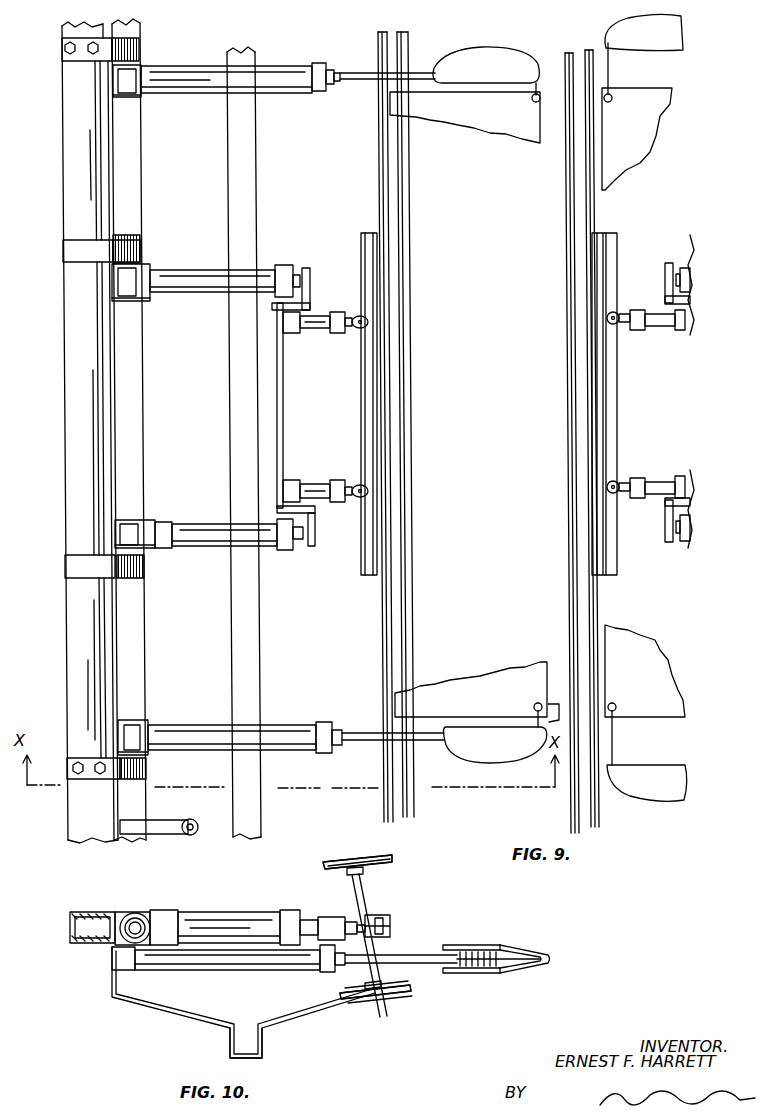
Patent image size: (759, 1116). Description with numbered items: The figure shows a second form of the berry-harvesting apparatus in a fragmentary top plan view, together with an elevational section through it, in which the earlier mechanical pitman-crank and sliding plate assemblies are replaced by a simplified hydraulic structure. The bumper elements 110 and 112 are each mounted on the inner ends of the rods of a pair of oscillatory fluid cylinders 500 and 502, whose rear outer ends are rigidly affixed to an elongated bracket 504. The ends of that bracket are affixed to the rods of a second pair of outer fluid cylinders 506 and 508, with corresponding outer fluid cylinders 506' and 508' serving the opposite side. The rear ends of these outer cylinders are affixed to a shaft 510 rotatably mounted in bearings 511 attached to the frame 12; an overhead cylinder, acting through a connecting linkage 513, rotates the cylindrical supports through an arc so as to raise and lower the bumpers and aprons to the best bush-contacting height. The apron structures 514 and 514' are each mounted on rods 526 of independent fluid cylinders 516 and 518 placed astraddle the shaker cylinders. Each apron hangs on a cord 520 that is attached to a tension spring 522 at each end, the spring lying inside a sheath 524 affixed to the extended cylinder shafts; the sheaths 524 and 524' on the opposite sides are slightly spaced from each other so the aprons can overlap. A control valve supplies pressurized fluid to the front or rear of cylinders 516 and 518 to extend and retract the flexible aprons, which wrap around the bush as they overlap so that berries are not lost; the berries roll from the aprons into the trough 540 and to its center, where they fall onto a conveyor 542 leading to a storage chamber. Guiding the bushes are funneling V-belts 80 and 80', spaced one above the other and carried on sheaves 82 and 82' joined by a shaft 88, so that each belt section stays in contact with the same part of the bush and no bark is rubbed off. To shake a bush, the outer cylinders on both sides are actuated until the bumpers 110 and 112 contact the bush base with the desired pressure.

In FIG. 9, the frame 12 is at (75, 182).
In FIG. 10, the frame 12 is at (88, 914).
In FIG. 9, the shaft 510 is at (132, 218).
In FIG. 10, the shaft 510 is at (140, 913).
In FIG. 9, the bearings 511 is at (110, 248).
In FIG. 9, the fluid cylinder 518 is at (205, 42).
In FIG. 9, the rods 526 is at (452, 34).
In FIG. 10, the rods 526 is at (388, 960).
In FIG. 9, the sheath 524 is at (482, 400).
In FIG. 10, the sheath 524 is at (502, 948).
In FIG. 9, the cord 520 is at (538, 90).
In FIG. 9, the apron structure 514 is at (468, 404).
In FIG. 9, the outer fluid cylinder 506 is at (211, 272).
In FIG. 9, the oscillatory fluid cylinder 500 is at (322, 302).
In FIG. 9, the oscillatory fluid cylinder 502 is at (312, 488).
In FIG. 10, the oscillatory fluid cylinder 502 is at (322, 920).
In FIG. 9, the elongated bracket 504 is at (280, 395).
In FIG. 9, the outer fluid cylinder 508 is at (209, 509).
In FIG. 10, the outer fluid cylinder 508 is at (234, 914).
In FIG. 9, the fluid cylinder 516 is at (160, 728).
In FIG. 10, the fluid cylinder 516 is at (170, 962).
In FIG. 9, the connecting linkage 513 is at (158, 824).
In FIG. 9, the bumper element 110 is at (368, 236).
In FIG. 10, the bumper element 110 is at (392, 925).
In FIG. 9, the bumper element 112 is at (607, 233).
In FIG. 9, the outer fluid cylinder 506' is at (650, 285).
In FIG. 9, the outer fluid cylinder 508' is at (650, 528).
In FIG. 9, the apron structure 514' is at (645, 667).
In FIG. 9, the sheath 524' is at (652, 766).
In FIG. 10, the V-belt 80 is at (386, 865).
In FIG. 10, the sheave 82 is at (357, 849).
In FIG. 10, the shaft 88 is at (372, 900).
In FIG. 10, the tension spring 522 is at (485, 976).
In FIG. 10, the trough 540 is at (294, 1020).
In FIG. 10, the conveyor 542 is at (245, 1030).
In FIG. 10, the V-belt 80' is at (391, 1000).
In FIG. 10, the sheave 82' is at (375, 1016).